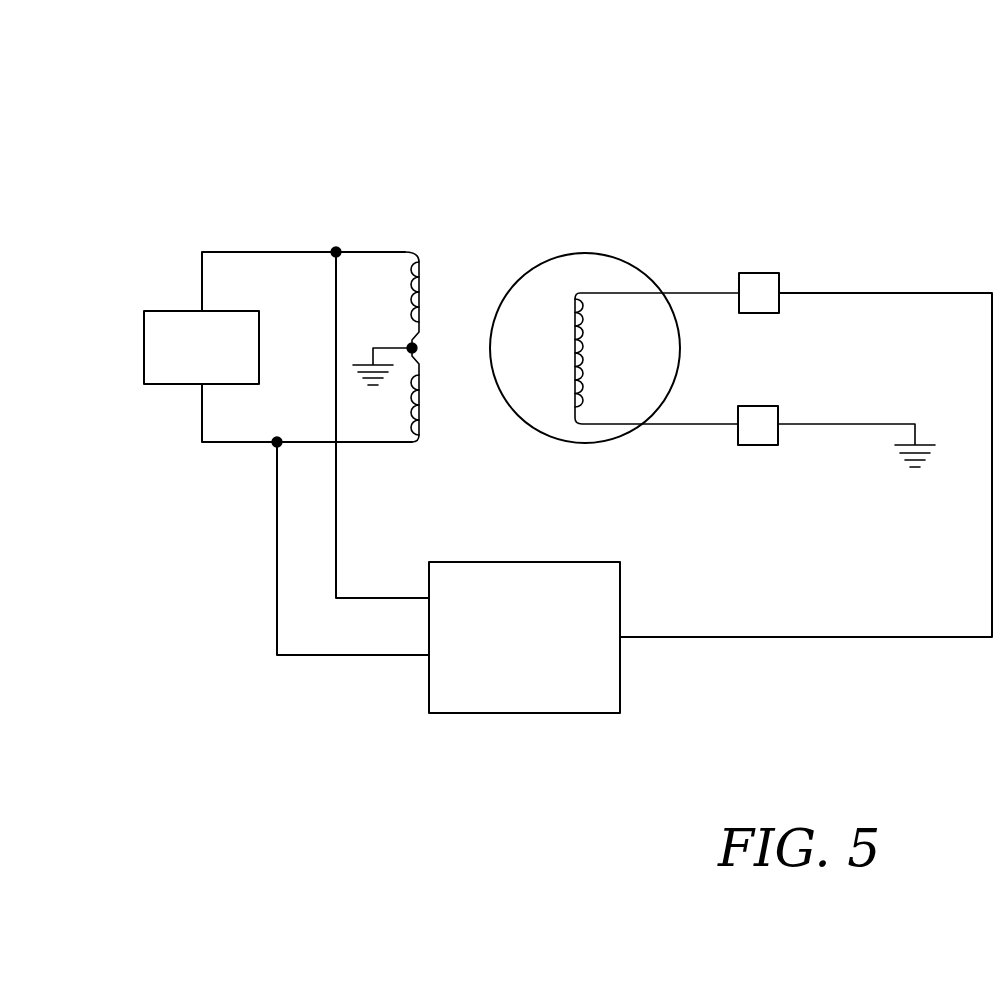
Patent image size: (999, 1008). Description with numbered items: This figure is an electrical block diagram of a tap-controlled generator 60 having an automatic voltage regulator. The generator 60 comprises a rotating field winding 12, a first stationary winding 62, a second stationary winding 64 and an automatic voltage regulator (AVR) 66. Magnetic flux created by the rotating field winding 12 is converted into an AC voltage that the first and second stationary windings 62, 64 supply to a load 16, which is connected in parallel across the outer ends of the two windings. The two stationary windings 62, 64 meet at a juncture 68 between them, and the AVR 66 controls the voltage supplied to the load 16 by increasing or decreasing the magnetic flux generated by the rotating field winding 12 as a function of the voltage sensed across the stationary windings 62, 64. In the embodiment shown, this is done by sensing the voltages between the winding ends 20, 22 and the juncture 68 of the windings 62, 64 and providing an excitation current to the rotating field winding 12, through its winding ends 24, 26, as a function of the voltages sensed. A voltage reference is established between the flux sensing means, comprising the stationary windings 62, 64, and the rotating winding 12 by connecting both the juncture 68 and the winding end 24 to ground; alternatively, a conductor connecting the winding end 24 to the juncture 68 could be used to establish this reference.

The generator 60 is at (703, 158).
The load 16 is at (143, 347).
The winding end 22 is at (338, 522).
The winding end 20 is at (273, 617).
The first stationary winding 62 is at (444, 293).
The second stationary winding 64 is at (412, 453).
The juncture 68 is at (392, 346).
The rotating field winding 12 is at (602, 452).
The winding end 26 is at (838, 307).
The winding end 24 is at (817, 439).
The automatic voltage regulator (AVR) 66 is at (600, 727).